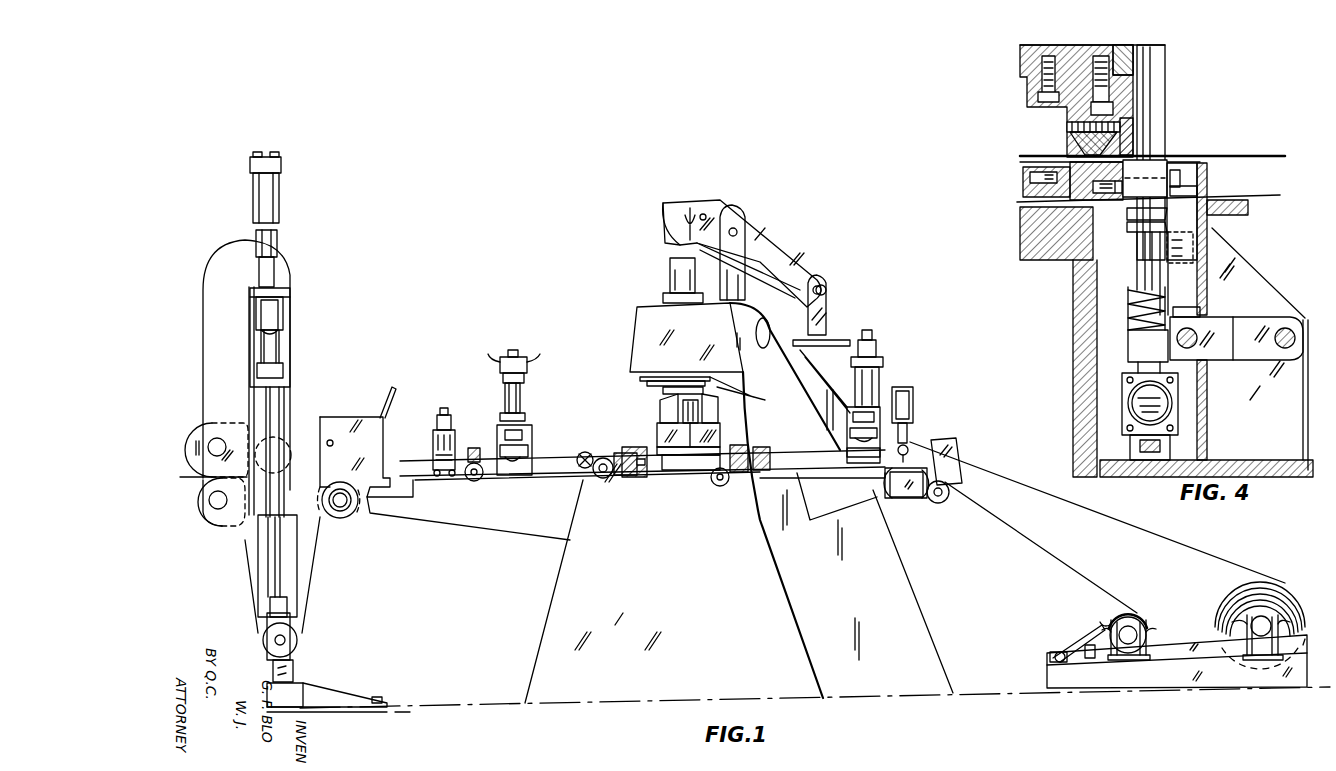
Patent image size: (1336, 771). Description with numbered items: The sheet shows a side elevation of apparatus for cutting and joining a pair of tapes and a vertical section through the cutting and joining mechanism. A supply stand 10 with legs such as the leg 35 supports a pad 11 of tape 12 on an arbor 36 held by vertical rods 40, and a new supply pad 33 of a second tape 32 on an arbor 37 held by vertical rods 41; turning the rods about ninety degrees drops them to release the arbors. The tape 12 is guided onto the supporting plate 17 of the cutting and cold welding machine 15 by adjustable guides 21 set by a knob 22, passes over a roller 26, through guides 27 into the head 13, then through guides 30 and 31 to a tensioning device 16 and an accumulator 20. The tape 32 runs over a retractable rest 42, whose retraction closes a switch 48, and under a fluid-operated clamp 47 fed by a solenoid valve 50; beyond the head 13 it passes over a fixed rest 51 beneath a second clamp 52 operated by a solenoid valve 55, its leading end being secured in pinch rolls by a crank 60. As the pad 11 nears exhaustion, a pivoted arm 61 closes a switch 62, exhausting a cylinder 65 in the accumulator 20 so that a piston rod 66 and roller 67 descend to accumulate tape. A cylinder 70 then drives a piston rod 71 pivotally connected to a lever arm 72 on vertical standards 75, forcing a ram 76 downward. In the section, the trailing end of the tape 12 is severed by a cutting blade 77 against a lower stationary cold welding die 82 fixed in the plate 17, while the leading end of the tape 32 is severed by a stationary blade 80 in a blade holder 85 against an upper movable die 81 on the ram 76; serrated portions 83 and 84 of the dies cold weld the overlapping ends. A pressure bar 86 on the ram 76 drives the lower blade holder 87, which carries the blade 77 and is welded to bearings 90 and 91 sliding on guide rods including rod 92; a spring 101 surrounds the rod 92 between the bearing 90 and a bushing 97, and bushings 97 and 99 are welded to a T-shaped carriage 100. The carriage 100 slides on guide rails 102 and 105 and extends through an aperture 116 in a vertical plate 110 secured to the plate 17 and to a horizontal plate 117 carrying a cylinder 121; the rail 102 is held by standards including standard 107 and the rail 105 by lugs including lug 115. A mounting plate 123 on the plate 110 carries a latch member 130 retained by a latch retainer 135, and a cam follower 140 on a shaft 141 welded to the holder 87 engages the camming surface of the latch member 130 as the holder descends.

In FIG. 1, the supply stand 10 is at (1203, 600).
In FIG. 1, the pad 11 is at (1115, 622).
In FIG. 1, the tape 12 is at (998, 520).
In FIG. 4, the tape 12 is at (1262, 193).
In FIG. 1, the head 13 is at (726, 432).
In FIG. 4, the head 13 is at (1244, 113).
In FIG. 1, the cutting and cold welding machine 15 is at (870, 266).
In FIG. 1, the tensioning device 16 is at (358, 420).
In FIG. 1, the supporting plate 17 is at (548, 480).
In FIG. 4, the supporting plate 17 is at (1030, 243).
In FIG. 1, the accumulator 20 is at (339, 295).
In FIG. 1, the adjustable guides 21 is at (958, 455).
In FIG. 1, the knob 22 is at (942, 502).
In FIG. 1, the roller 26 is at (906, 500).
In FIG. 1, the adjustable guides 27 is at (757, 448).
In FIG. 1, the adjustable guides 30 is at (632, 450).
In FIG. 1, the adjustable guides 31 is at (476, 450).
In FIG. 1, the second tape 32 is at (1085, 535).
In FIG. 4, the second tape 32 is at (1270, 152).
In FIG. 1, the supply pad 33 is at (1285, 593).
In FIG. 1, the leg 35 is at (1205, 645).
In FIG. 1, the arbor 36 is at (1122, 650).
In FIG. 1, the arbor 37 is at (1261, 643).
In FIG. 1, the vertical rods 40 is at (1138, 615).
In FIG. 1, the vertical rods 41 is at (1265, 606).
In FIG. 1, the retractable rest 42 is at (905, 450).
In FIG. 1, the fluid-operated clamp 47 is at (822, 463).
In FIG. 1, the switch 48 is at (912, 396).
In FIG. 1, the solenoid valve 50 is at (867, 348).
In FIG. 1, the fixed rest 51 is at (594, 455).
In FIG. 1, the second fluid-operated clamp 52 is at (528, 456).
In FIG. 1, the solenoid valve 55 is at (522, 352).
In FIG. 1, the crank 60 is at (432, 472).
In FIG. 1, the arm 61 is at (1080, 640).
In FIG. 1, the switch 62 is at (1085, 660).
In FIG. 1, the cylinder 65 is at (270, 192).
In FIG. 1, the piston rod 66 is at (280, 397).
In FIG. 1, the roller 67 is at (310, 440).
In FIG. 1, the cylinder 70 is at (840, 358).
In FIG. 1, the piston rod 71 is at (825, 320).
In FIG. 1, the lever arm 72 is at (760, 238).
In FIG. 1, the vertical standards 75 is at (743, 268).
In FIG. 1, the ram 76 is at (672, 392).
In FIG. 4, the ram 76 is at (1022, 60).
In FIG. 4, the cutting blade 77 is at (1097, 205).
In FIG. 4, the stationary cutting blade 80 is at (1060, 150).
In FIG. 4, the upper cold welding die 81 is at (1068, 140).
In FIG. 4, the lower cold welding die 82 is at (1135, 222).
In FIG. 4, the serrated portion 83 is at (1070, 147).
In FIG. 4, the serrated portion 84 is at (1100, 190).
In FIG. 4, the blade holder 85 is at (1032, 188).
In FIG. 4, the pressure bar 86 is at (1118, 138).
In FIG. 4, the blade holder 87 is at (1098, 182).
In FIG. 4, the bearing 90 is at (1195, 165).
In FIG. 4, the bearing 91 is at (1162, 63).
In FIG. 4, the guide rod 92 is at (1138, 272).
In FIG. 4, the bushing 97 is at (1128, 348).
In FIG. 4, the bushing 99 is at (1128, 305).
In FIG. 4, the T-shaped carriage 100 is at (1258, 314).
In FIG. 4, the spring 101 is at (1135, 232).
In FIG. 4, the guide rail 102 is at (1285, 350).
In FIG. 4, the guide rail 105 is at (1197, 345).
In FIG. 4, the vertical standard 107 is at (1252, 262).
In FIG. 4, the vertically-mounted plate 110 is at (1208, 400).
In FIG. 4, the lug 115 is at (1192, 312).
In FIG. 4, the aperture 116 is at (1232, 307).
In FIG. 4, the horizontal plate 117 is at (1258, 460).
In FIG. 4, the cylinder 121 is at (1125, 425).
In FIG. 4, the mounting plate 123 is at (1185, 185).
In FIG. 4, the latch member 130 is at (1200, 225).
In FIG. 4, the latch retainer 135 is at (1178, 262).
In FIG. 4, the cam follower 140 is at (1200, 165).
In FIG. 4, the shaft 141 is at (1158, 170).